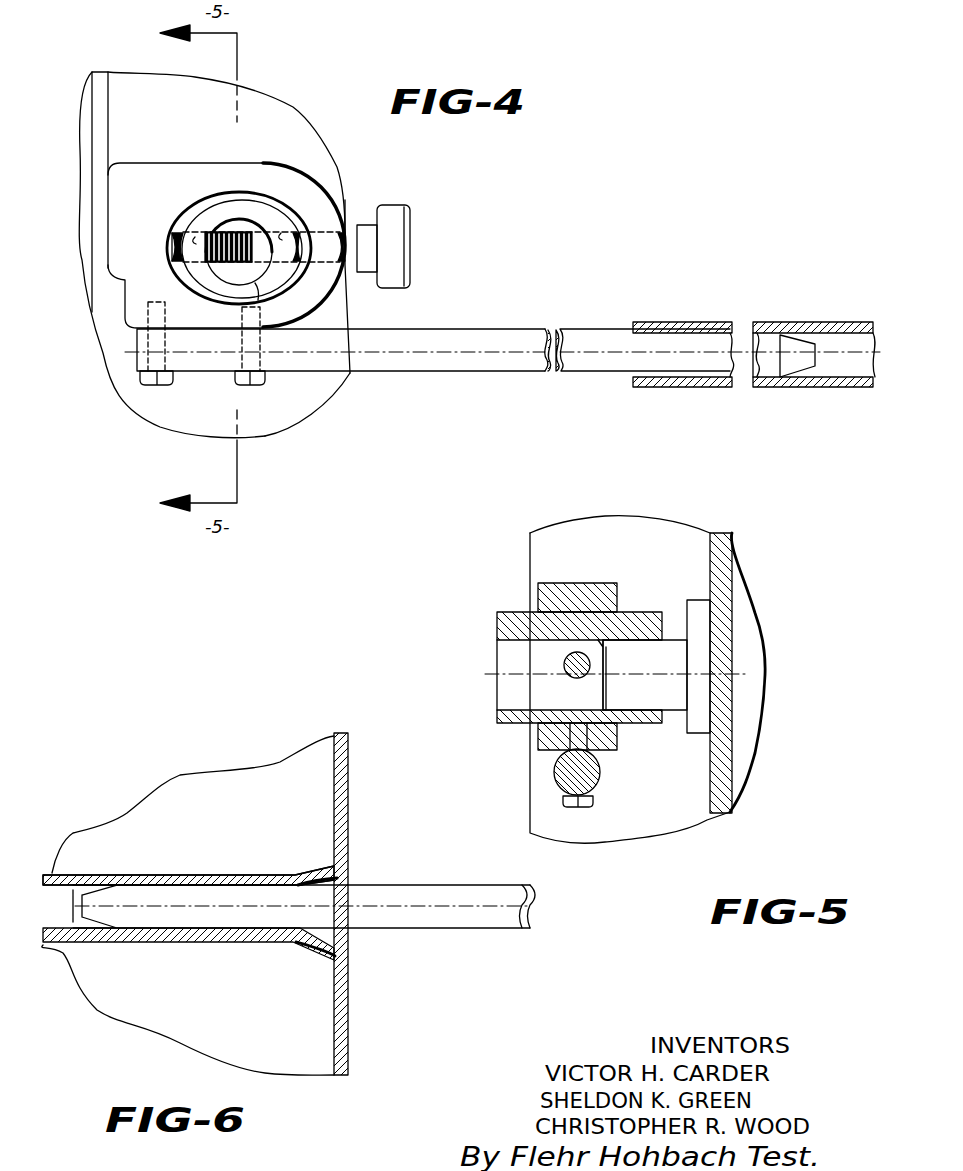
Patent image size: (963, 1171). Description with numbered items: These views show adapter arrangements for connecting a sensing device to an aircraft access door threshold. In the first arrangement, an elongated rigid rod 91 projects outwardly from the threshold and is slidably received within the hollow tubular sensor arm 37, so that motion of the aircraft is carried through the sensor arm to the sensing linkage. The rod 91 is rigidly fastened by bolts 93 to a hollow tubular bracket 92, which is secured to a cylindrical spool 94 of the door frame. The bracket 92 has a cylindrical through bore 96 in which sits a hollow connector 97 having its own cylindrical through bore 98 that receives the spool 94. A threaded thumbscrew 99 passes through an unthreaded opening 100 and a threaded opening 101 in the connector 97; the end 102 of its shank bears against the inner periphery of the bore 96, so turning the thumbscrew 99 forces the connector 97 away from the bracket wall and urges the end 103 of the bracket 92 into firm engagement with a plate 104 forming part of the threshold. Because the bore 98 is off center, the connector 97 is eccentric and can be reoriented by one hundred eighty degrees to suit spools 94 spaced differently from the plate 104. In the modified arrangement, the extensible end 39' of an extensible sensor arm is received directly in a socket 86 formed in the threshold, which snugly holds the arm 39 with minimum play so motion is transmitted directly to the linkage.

In FIG. 4, the sensor arm 37 is at (698, 323).
In FIG. 6, the shaft 39 is at (304, 892).
In FIG. 6, the extensible end 39' is at (304, 892).
In FIG. 6, the socket 86 is at (230, 882).
In FIG. 4, the rigid rod 91 is at (442, 362).
In FIG. 5, the rigid rod 91 is at (562, 773).
In FIG. 4, the hollow tubular bracket 92 is at (320, 192).
In FIG. 5, the hollow tubular bracket 92 is at (557, 616).
In FIG. 4, the bolts 93 is at (152, 387).
In FIG. 5, the bolts 93 is at (590, 798).
In FIG. 4, the cylindrical spool 94 is at (262, 282).
In FIG. 5, the cylindrical spool 94 is at (640, 648).
In FIG. 4, the cylindrical through bore 96 is at (296, 278).
In FIG. 5, the cylindrical through bore 96 is at (556, 618).
In FIG. 4, the hollow connector 97 is at (247, 197).
In FIG. 5, the hollow connector 97 is at (509, 613).
In FIG. 4, the cylindrical through bore 98 is at (226, 283).
In FIG. 5, the cylindrical through bore 98 is at (504, 642).
In FIG. 4, the threaded thumbscrew 99 is at (400, 234).
In FIG. 5, the threaded thumbscrew 99 is at (570, 680).
In FIG. 4, the opening 100 is at (282, 235).
In FIG. 4, the opening 101 is at (196, 237).
In FIG. 4, the end of the shank 102 is at (172, 240).
In FIG. 4, the end of the bracket 103 is at (112, 240).
In FIG. 4, the plate 104 is at (118, 52).
In FIG. 5, the plate 104 is at (652, 528).